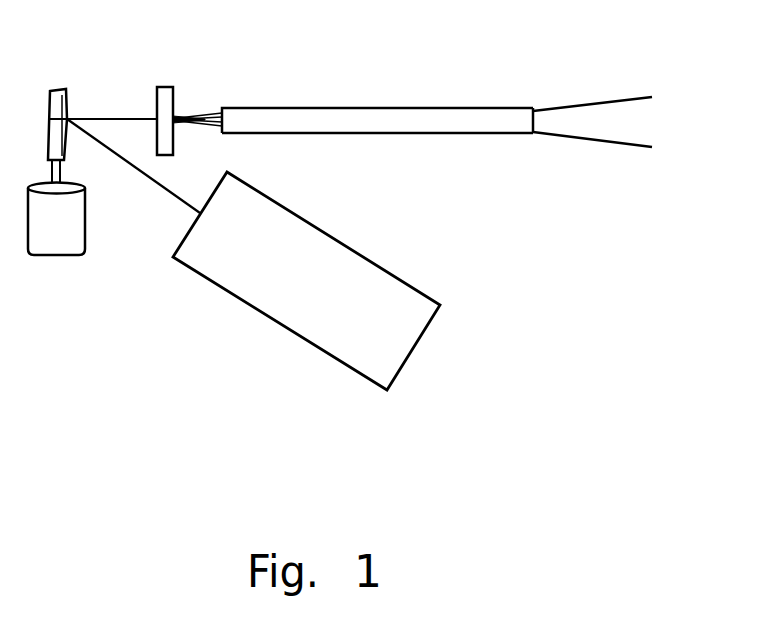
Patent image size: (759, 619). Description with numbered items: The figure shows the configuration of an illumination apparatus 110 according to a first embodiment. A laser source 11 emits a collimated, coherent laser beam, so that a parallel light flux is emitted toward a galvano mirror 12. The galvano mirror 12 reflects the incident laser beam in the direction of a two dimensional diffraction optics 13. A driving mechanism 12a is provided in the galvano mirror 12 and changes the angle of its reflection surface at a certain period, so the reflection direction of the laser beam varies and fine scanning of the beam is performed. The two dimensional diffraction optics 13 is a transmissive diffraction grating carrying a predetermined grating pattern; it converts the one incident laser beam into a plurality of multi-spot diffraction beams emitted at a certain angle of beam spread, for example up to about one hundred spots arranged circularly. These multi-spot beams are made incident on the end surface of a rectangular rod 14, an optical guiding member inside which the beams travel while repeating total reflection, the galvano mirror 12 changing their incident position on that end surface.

The laser source 11 is at (407, 342).
The galvano mirror 12 is at (57, 90).
The driving mechanism 12a is at (65, 248).
The two dimensional diffraction optics 13 is at (165, 90).
The rectangular rod 14 is at (407, 118).
The illumination apparatus 110 is at (590, 392).